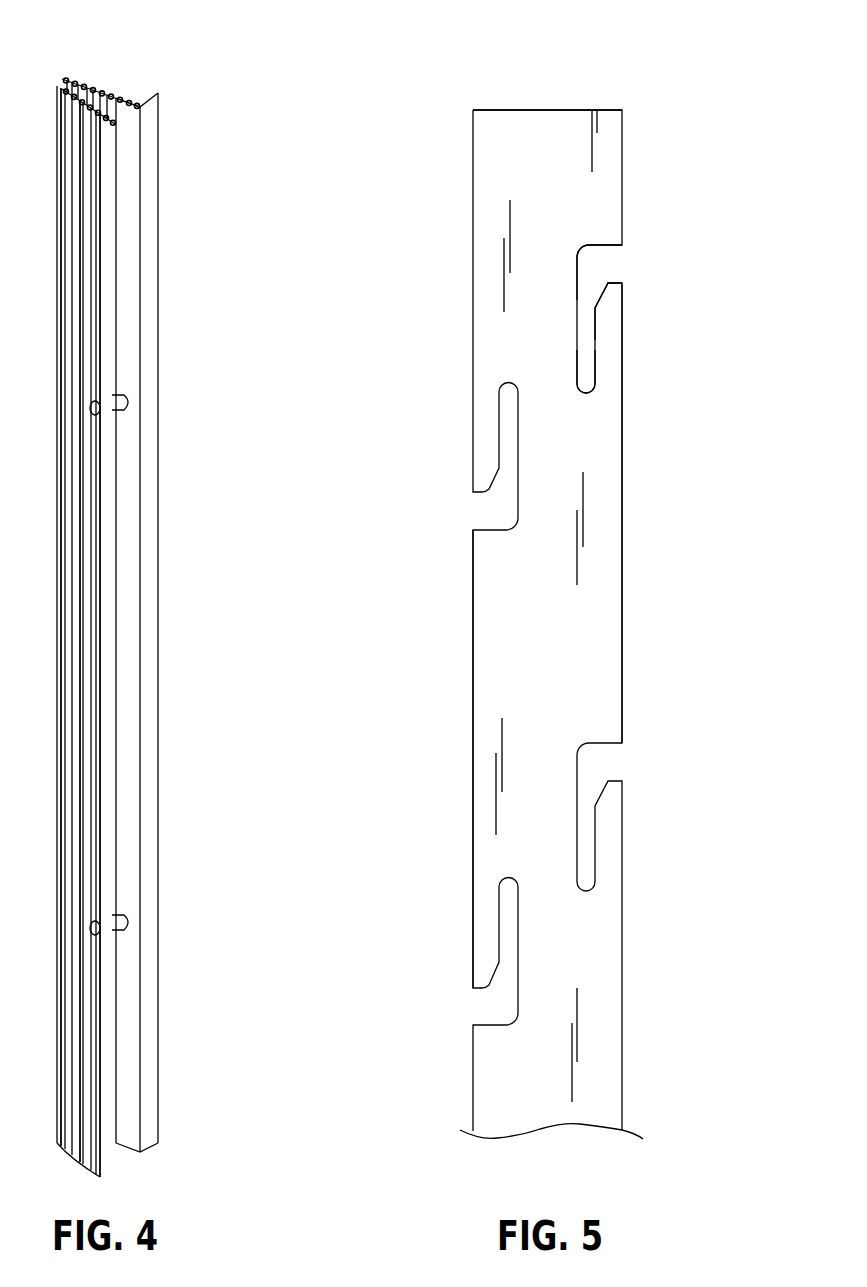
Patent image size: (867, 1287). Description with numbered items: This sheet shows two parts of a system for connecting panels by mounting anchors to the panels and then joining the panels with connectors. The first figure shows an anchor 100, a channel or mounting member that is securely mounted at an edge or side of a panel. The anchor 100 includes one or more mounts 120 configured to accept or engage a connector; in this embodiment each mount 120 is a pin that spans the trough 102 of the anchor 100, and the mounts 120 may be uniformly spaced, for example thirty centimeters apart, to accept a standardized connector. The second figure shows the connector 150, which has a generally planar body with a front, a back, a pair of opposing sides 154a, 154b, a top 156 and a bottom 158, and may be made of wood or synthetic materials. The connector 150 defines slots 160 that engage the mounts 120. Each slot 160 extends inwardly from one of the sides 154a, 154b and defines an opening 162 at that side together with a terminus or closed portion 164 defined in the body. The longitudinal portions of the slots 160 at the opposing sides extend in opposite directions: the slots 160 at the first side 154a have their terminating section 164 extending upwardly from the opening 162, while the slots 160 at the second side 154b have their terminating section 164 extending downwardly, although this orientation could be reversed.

In FIG. 4, the anchor 100 is at (170, 591).
In FIG. 4, the trough 102 is at (130, 201).
In FIG. 4, the mount 120 is at (132, 398).
In FIG. 5, the connector 150 is at (557, 609).
In FIG. 5, the top 156 is at (538, 109).
In FIG. 5, the opening 162 is at (615, 263).
In FIG. 5, the slot 160 is at (636, 283).
In FIG. 5, the terminus 164 is at (590, 377).
In FIG. 5, the first side 154a is at (473, 613).
In FIG. 5, the second side 154b is at (622, 597).
In FIG. 5, the bottom 158 is at (540, 1132).